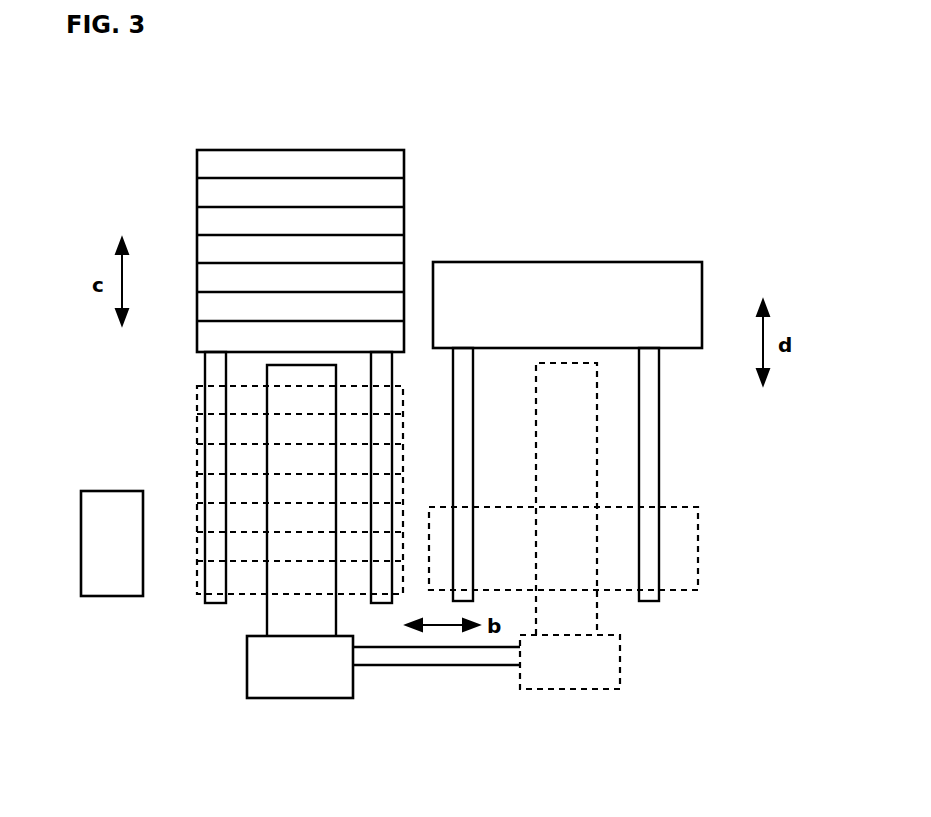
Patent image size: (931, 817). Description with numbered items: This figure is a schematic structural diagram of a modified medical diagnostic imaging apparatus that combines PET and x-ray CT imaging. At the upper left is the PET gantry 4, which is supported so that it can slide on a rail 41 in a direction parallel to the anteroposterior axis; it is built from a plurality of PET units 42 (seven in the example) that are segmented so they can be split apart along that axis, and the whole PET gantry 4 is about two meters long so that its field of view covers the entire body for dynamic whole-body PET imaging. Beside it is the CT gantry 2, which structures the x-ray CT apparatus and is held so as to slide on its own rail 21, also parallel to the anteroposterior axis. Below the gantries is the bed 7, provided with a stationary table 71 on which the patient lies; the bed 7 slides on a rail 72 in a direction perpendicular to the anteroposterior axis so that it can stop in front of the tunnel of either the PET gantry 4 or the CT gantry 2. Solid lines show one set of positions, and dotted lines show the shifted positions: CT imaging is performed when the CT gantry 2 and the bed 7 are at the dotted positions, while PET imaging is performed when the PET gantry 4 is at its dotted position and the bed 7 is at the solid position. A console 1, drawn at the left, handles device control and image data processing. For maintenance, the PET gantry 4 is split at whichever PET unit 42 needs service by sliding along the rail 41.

The console 1 is at (105, 572).
The CT gantry 2 is at (600, 396).
The rail 21 is at (652, 408).
The PET gantry 4 is at (297, 342).
The rail 41 is at (214, 362).
The PET unit 42 is at (393, 158).
The bed 7 is at (419, 690).
The stationary table 71 is at (276, 620).
The rail 72 is at (446, 657).